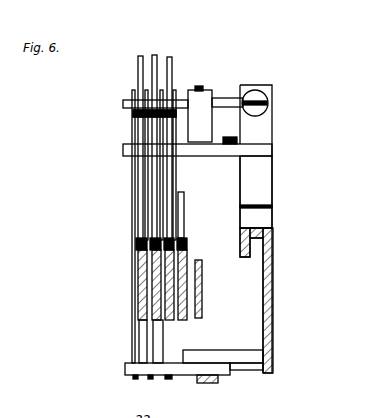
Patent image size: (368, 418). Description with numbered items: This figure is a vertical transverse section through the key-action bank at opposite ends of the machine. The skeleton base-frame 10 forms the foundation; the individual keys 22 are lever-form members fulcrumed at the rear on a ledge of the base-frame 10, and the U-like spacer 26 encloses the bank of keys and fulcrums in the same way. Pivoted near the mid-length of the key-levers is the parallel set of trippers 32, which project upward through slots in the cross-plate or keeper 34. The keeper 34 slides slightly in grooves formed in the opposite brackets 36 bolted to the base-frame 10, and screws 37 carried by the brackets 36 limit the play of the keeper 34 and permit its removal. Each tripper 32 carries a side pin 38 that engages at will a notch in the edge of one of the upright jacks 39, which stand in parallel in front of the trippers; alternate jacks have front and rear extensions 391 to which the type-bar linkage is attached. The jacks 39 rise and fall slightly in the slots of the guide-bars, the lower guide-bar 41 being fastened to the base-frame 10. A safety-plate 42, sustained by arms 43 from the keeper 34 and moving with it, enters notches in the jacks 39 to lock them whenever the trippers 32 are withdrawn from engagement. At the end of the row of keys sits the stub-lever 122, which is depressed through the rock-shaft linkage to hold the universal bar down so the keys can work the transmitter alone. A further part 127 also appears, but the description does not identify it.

The skeleton base-frame 10 is at (273, 293).
The keys 22 is at (160, 298).
The U-like spacer 26 is at (203, 293).
The trippers 32 is at (173, 60).
The keeper 34 is at (221, 100).
The brackets 36 is at (256, 192).
The screws 37 is at (272, 111).
The side pin 38 is at (132, 113).
The jacks 39 is at (167, 213).
The front and rear extensions 391 is at (111, 196).
The lower guide-bar 41 is at (192, 375).
The safety-plate 42 is at (202, 150).
The arms 43 is at (200, 114).
The stub-lever 122 is at (190, 263).
The rod 127 is at (184, 213).